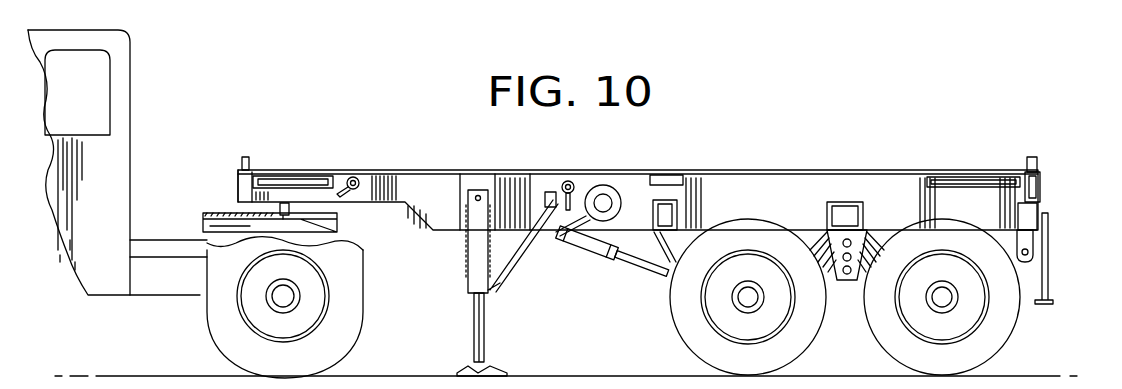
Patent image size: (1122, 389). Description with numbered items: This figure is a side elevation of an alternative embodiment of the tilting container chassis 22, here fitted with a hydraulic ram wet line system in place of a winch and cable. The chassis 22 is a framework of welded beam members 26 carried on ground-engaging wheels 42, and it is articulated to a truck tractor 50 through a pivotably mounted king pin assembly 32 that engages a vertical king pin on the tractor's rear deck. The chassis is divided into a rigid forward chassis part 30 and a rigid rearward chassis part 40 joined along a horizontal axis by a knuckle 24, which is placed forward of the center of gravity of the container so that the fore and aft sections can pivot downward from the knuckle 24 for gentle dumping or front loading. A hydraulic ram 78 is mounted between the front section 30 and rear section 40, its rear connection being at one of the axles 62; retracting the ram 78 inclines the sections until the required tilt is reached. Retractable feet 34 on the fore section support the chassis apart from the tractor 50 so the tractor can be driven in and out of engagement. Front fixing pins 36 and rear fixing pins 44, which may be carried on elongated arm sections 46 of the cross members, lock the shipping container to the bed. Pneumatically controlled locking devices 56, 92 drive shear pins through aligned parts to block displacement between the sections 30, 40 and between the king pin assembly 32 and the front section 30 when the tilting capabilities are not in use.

The chassis 22 is at (533, 286).
The knuckle 24 is at (604, 162).
The beam members 26 is at (758, 185).
The forward chassis part 30 is at (418, 174).
The king pin assembly 32 is at (340, 207).
The retractable feet 34 is at (485, 318).
The front fixing pins 36 is at (245, 157).
The rearward chassis part 40 is at (866, 165).
The wheels 42 is at (677, 320).
The rear fixing pins 44 is at (1038, 162).
The elongated arm sections 46 is at (1033, 186).
The truck tractor 50 is at (118, 148).
The pneumatically controlled locking device 56 is at (567, 181).
The axle 62 is at (757, 297).
The hydraulic ram 78 is at (578, 252).
The pneumatically controlled locking device 92 is at (352, 177).